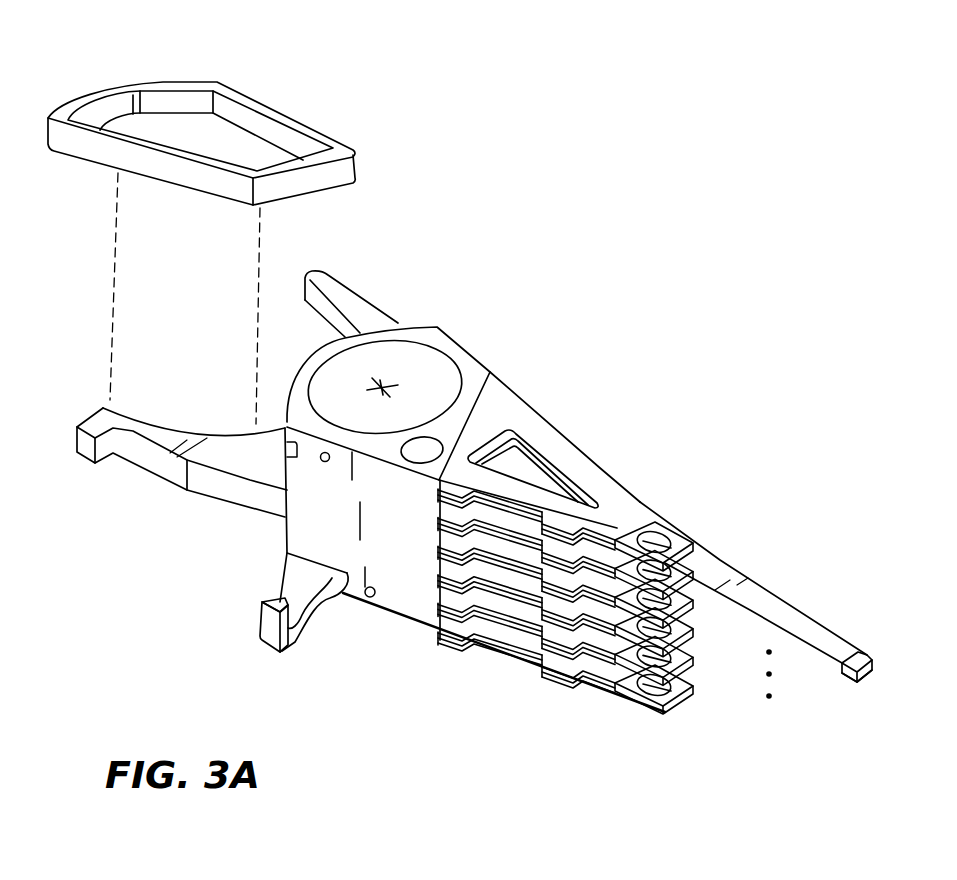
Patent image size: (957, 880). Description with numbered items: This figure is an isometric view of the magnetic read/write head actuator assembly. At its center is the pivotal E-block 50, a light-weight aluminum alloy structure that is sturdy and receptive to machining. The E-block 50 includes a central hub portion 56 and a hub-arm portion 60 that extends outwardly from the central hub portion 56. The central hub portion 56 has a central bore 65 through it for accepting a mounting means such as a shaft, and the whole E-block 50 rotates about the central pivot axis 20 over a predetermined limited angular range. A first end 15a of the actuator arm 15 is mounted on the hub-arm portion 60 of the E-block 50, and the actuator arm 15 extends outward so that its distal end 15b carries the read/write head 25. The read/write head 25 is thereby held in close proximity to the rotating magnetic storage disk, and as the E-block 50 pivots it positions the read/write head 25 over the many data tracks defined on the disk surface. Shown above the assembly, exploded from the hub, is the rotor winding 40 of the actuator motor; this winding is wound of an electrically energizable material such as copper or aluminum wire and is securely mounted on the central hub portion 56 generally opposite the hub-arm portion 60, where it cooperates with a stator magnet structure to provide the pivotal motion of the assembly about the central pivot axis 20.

The rotor winding 40 is at (279, 134).
The E-block 50 is at (371, 538).
The central hub portion 56 is at (289, 534).
The central bore 65 is at (393, 338).
The central pivot axis 20 is at (392, 376).
The hub-arm portion 60 is at (568, 445).
The actuator arm 15 is at (777, 605).
The first end of the actuator arm 15a is at (685, 528).
The distal end of the actuator arm 15b is at (863, 648).
The read/write head 25 is at (846, 690).